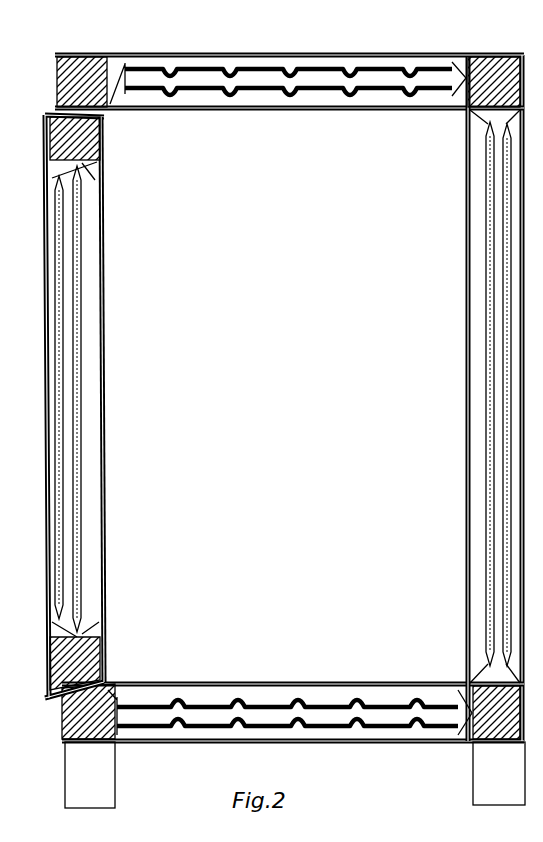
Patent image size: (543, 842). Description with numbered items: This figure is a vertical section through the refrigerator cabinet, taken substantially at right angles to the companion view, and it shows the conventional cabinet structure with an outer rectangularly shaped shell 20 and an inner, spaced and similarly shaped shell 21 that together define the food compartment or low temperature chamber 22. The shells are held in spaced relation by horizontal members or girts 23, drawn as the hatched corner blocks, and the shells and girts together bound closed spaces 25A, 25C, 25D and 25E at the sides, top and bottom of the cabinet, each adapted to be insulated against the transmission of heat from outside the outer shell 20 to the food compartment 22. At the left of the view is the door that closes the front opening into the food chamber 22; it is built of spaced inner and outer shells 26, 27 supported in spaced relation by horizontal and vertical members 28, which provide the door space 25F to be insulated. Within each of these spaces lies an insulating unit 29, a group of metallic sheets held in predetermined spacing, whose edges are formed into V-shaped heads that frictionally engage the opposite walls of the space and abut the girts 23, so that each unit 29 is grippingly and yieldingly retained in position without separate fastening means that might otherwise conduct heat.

The outer shell 20 is at (522, 468).
The inner shell 21 is at (466, 433).
The food compartment 22 is at (289, 396).
The horizontal members or girts 23 is at (489, 70).
The closed space 25A is at (40, 239).
The closed space 25C is at (483, 296).
The closed space 25D is at (294, 39).
The closed space 25E is at (378, 729).
The door space 25F is at (52, 497).
The door inner shell 26 is at (45, 333).
The door outer shell 27 is at (105, 388).
The horizontal and vertical members 28 is at (100, 140).
The insulating unit 29 is at (266, 91).